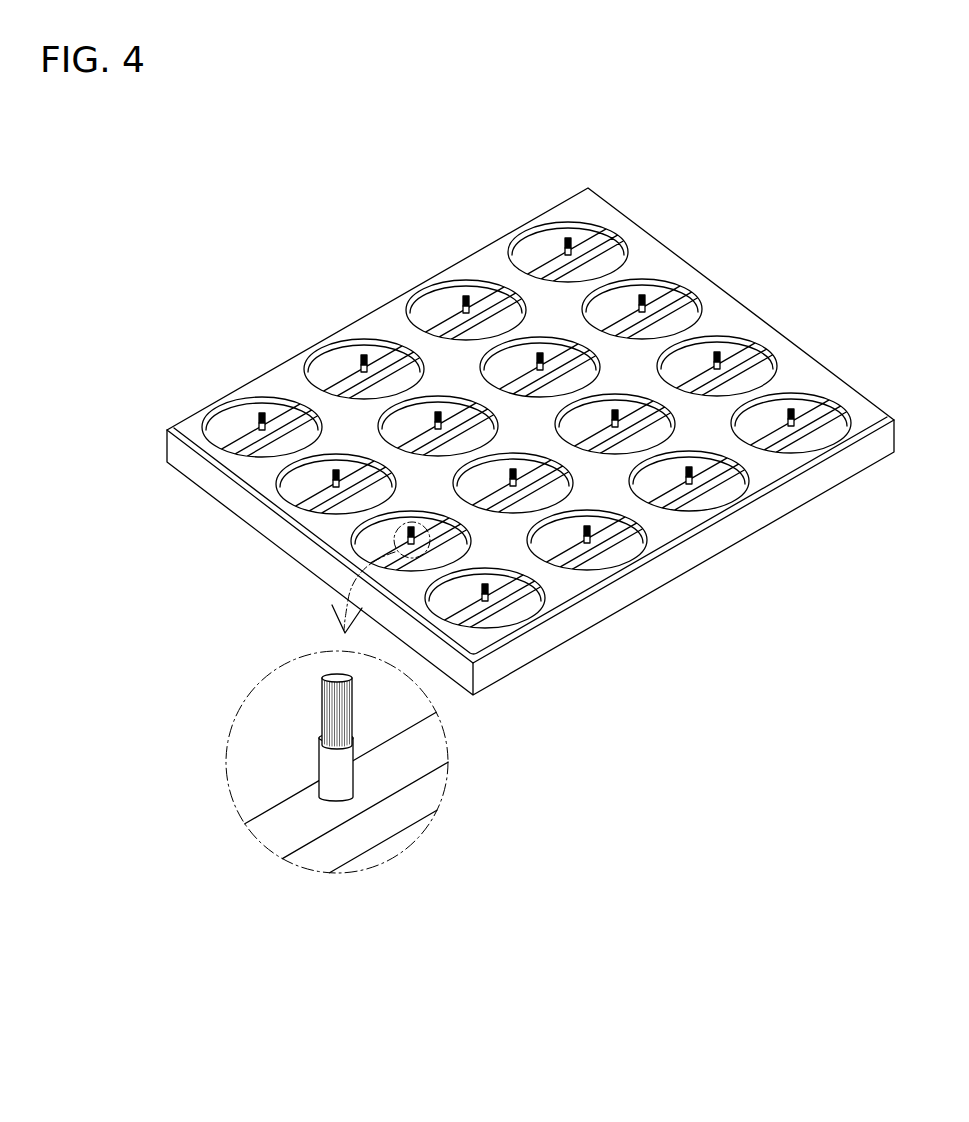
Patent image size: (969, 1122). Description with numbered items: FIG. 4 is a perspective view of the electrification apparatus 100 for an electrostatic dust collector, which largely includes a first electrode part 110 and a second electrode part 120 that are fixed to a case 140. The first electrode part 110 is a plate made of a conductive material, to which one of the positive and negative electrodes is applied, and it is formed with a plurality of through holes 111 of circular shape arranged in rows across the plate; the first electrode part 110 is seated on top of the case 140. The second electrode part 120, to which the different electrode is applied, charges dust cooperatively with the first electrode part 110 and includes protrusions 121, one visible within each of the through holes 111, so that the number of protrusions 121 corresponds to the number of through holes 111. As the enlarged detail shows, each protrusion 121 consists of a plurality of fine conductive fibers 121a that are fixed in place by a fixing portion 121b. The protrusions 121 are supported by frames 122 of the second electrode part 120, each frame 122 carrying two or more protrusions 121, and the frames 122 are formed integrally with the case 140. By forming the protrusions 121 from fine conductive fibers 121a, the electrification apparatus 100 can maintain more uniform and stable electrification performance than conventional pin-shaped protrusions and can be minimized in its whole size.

The electrification apparatus 100 is at (808, 131).
The first electrode part 110 is at (736, 310).
The through holes 111 is at (620, 261).
The case 140 is at (853, 462).
The second electrode part 120 is at (424, 860).
The protrusions 121 is at (135, 677).
The fine conductive fibers 121a is at (320, 718).
The fixing portion 121b is at (337, 772).
The frames 122 is at (323, 852).